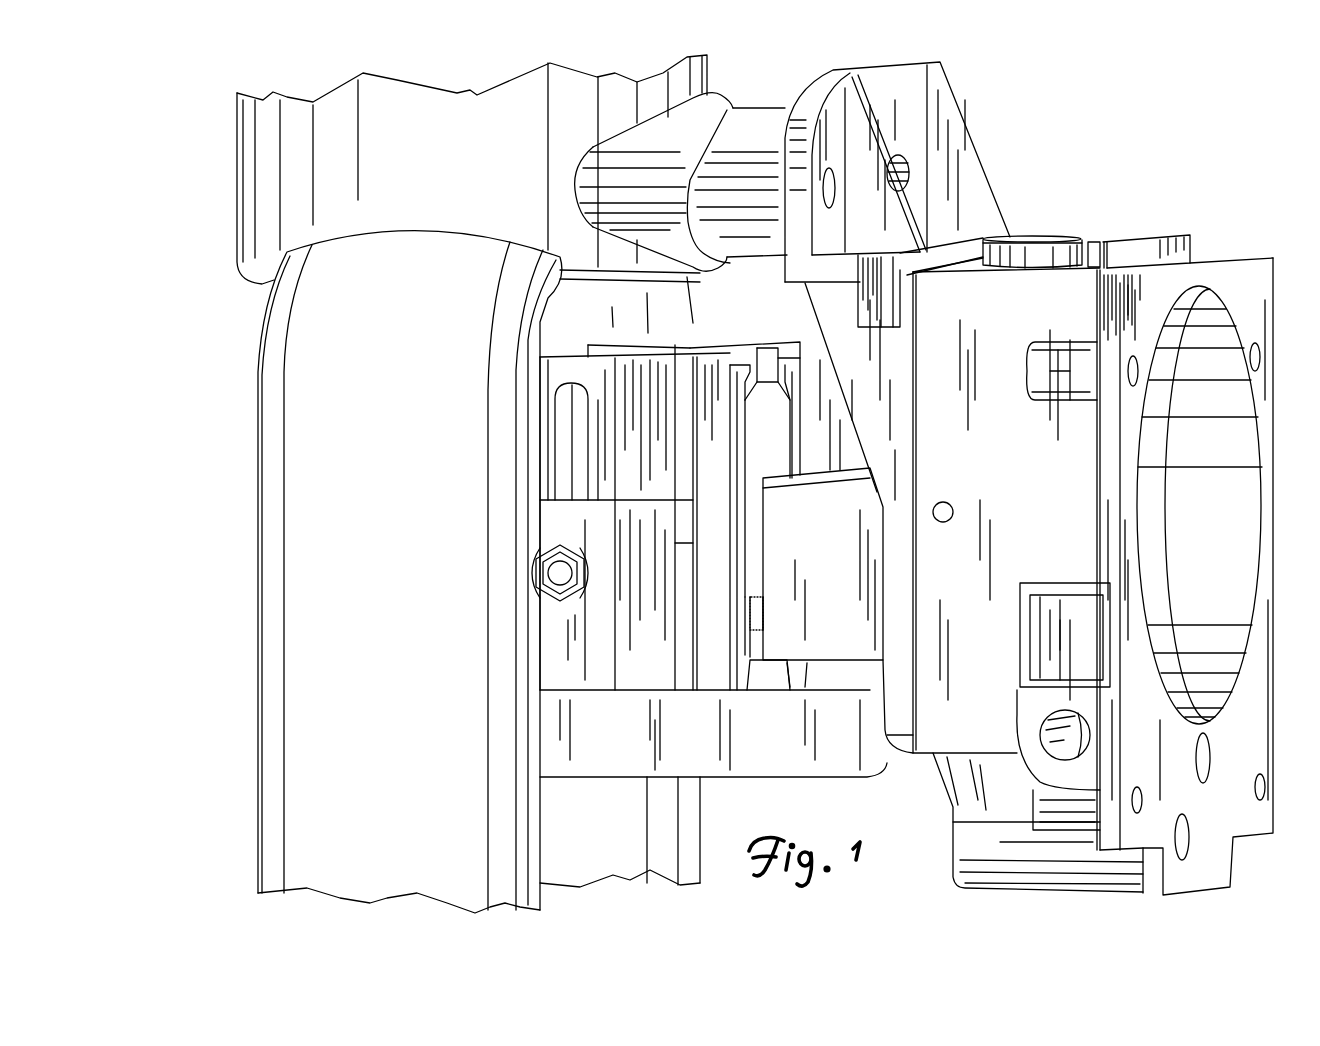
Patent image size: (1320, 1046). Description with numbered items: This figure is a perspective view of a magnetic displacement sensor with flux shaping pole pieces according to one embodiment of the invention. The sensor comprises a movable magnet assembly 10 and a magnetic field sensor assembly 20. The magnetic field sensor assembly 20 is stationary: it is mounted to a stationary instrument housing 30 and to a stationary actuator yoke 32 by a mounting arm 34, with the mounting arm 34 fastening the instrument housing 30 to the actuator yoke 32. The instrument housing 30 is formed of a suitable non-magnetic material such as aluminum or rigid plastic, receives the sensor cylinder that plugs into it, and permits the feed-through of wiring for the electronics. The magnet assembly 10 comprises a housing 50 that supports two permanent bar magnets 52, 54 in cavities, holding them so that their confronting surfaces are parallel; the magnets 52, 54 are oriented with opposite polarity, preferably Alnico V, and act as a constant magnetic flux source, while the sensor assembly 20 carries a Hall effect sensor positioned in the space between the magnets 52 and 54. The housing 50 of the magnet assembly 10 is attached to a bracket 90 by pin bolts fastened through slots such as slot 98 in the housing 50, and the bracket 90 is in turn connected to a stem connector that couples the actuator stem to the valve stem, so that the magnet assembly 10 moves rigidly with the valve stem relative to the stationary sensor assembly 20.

The movable magnet assembly 10 is at (710, 338).
The magnetic field sensor assembly 20 is at (817, 470).
The stationary instrument housing 30 is at (1030, 221).
The stationary actuator yoke 32 is at (302, 662).
The mounting arm 34 is at (768, 752).
The housing 50 is at (735, 345).
The permanent bar magnet 52 is at (796, 422).
The permanent bar magnet 54 is at (740, 418).
The bracket 90 is at (593, 653).
The slot 98 is at (578, 406).